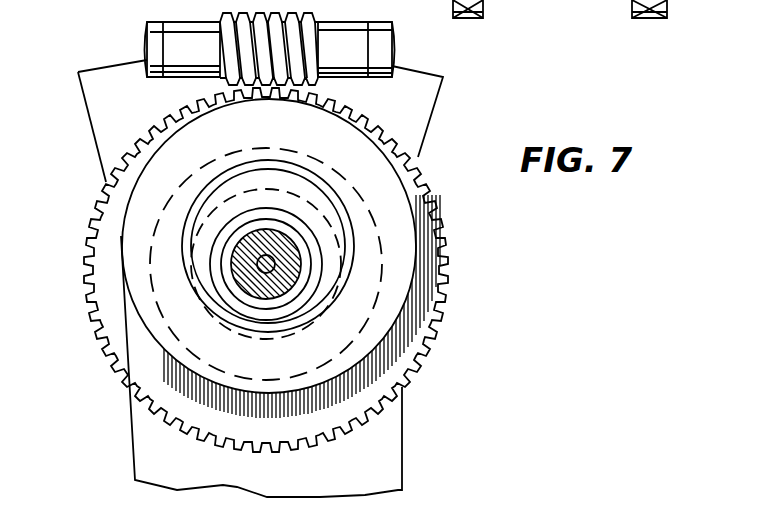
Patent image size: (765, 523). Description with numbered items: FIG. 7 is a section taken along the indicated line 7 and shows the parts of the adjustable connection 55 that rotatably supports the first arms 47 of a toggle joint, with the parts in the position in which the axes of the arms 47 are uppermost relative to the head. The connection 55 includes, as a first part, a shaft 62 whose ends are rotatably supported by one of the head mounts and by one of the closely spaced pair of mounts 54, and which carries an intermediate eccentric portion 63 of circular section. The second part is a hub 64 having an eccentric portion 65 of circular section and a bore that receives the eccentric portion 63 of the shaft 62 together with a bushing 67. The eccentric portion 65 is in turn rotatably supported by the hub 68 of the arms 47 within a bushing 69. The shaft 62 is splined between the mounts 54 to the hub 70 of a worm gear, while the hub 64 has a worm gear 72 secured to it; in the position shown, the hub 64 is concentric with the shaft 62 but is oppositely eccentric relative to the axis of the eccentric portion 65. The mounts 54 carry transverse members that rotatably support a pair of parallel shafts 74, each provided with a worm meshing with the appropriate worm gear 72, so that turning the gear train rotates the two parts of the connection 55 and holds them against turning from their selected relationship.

The section line 7 is at (4, 25).
The first arms 47 is at (393, 452).
The mounts 54 is at (546, 19).
The connection 55 is at (367, 257).
The shaft 62 is at (290, 280).
The eccentric portion 63 is at (295, 227).
The hub 64 is at (400, 289).
The eccentric portion 65 is at (283, 182).
The bushing 67 is at (220, 278).
The hub 68 is at (122, 247).
The bushing 69 is at (238, 165).
The hub 70 is at (318, 14).
The worm gear 72 is at (428, 182).
The shafts 74 is at (398, 56).